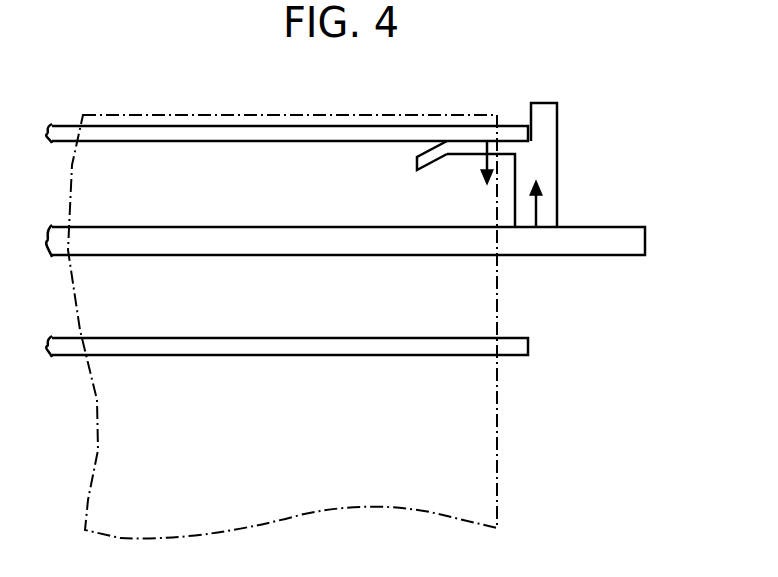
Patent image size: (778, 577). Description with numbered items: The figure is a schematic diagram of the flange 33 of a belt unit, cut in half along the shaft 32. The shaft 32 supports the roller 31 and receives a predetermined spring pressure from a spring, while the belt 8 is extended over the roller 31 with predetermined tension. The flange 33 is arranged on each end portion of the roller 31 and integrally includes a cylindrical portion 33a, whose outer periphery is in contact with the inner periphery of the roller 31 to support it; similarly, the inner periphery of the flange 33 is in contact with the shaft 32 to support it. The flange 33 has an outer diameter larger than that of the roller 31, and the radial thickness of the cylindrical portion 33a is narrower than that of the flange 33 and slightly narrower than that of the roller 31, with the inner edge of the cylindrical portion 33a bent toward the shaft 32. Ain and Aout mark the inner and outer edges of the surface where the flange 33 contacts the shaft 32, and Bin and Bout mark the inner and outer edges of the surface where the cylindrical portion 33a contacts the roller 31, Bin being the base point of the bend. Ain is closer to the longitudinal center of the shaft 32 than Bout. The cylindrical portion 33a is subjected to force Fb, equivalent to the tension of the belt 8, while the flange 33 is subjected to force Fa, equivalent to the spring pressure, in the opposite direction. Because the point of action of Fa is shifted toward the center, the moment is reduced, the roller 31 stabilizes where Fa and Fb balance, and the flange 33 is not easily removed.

The belt 8 is at (478, 415).
The roller 31 is at (230, 134).
The shaft 32 is at (648, 241).
The flange 33 is at (547, 160).
The cylindrical portion 33a is at (470, 148).
The force Fa is at (538, 210).
The force Fb is at (481, 172).
The inner edge of cylindrical portion contact surface Bin is at (450, 140).
The outer edge of cylindrical portion contact surface Bout is at (526, 133).
The inner edge of flange contact surface Ain is at (513, 228).
The outer edge of flange contact surface Aout is at (557, 228).